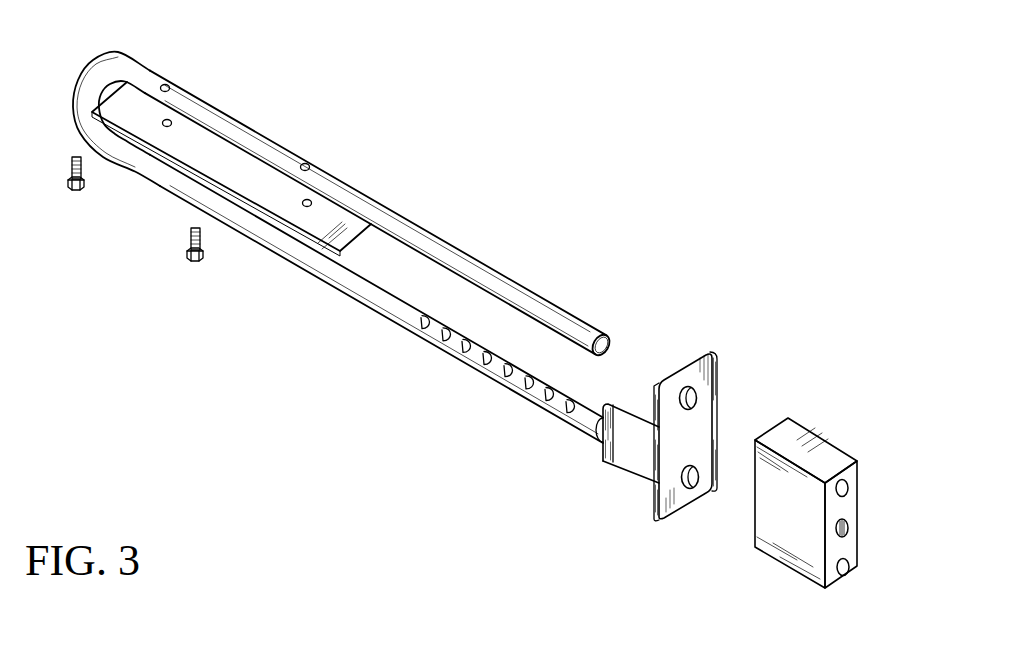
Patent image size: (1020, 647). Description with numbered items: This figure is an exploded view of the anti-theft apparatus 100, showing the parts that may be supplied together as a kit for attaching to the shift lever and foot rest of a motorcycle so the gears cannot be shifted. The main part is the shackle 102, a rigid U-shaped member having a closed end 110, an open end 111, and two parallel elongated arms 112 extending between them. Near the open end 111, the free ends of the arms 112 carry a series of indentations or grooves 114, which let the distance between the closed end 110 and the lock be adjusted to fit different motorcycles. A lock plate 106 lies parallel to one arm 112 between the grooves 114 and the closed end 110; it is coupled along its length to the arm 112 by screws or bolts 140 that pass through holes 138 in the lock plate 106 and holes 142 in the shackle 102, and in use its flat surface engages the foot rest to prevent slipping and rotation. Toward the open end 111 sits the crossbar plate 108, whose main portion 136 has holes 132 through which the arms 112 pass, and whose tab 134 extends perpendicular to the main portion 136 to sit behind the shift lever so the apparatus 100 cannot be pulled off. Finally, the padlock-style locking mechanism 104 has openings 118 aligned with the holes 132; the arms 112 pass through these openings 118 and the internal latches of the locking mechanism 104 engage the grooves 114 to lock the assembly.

The apparatus 100 is at (534, 143).
The shackle 102 is at (472, 270).
The locking mechanism 104 is at (792, 437).
The lock plate 106 is at (135, 110).
The crossbar plate 108 is at (667, 455).
The closed end 110 is at (108, 82).
The open end 111 is at (590, 368).
The elongated arms 112 is at (405, 227).
The grooves 114 is at (444, 338).
The openings 118 is at (847, 488).
The holes 132 is at (698, 392).
The tab 134 is at (613, 447).
The main portion 136 is at (680, 503).
The holes 138 is at (171, 120).
The bolts 140 is at (70, 182).
The holes 142 is at (169, 85).